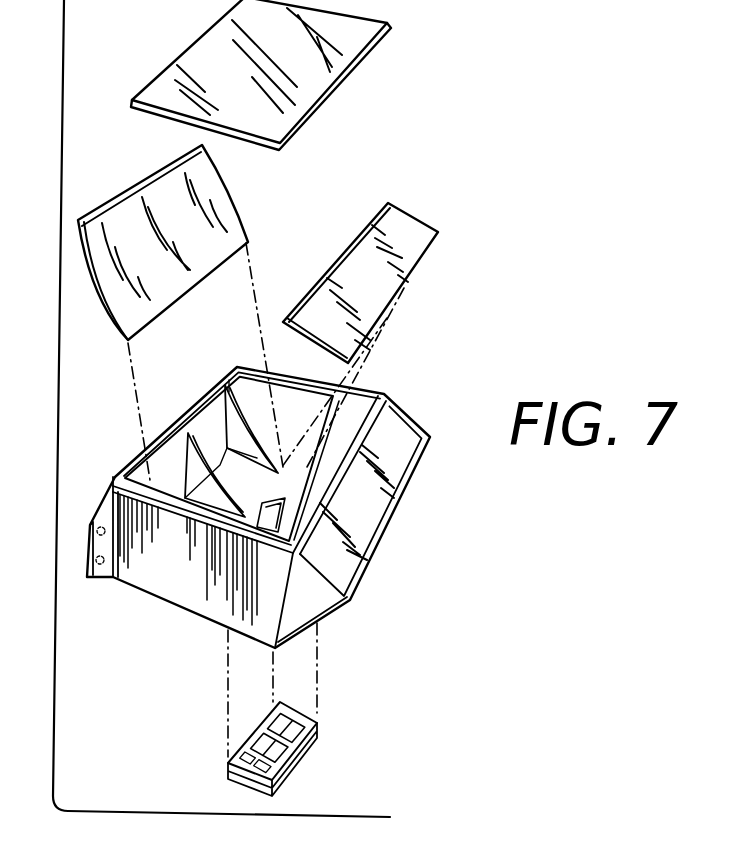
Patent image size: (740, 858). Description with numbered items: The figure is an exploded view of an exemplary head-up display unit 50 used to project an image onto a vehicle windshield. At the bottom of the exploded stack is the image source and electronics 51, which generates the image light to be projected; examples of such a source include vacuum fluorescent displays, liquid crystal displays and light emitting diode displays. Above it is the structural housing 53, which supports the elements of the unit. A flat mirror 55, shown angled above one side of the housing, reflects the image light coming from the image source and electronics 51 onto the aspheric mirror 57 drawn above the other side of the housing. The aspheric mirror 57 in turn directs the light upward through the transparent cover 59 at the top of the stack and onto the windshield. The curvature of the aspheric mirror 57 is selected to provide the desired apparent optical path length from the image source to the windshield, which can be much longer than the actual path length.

The head-up display unit 50 is at (58, 360).
The image source and electronics 51 is at (322, 731).
The structural housing 53 is at (377, 517).
The flat mirror 55 is at (386, 299).
The aspheric mirror 57 is at (117, 308).
The transparent cover 59 is at (348, 63).